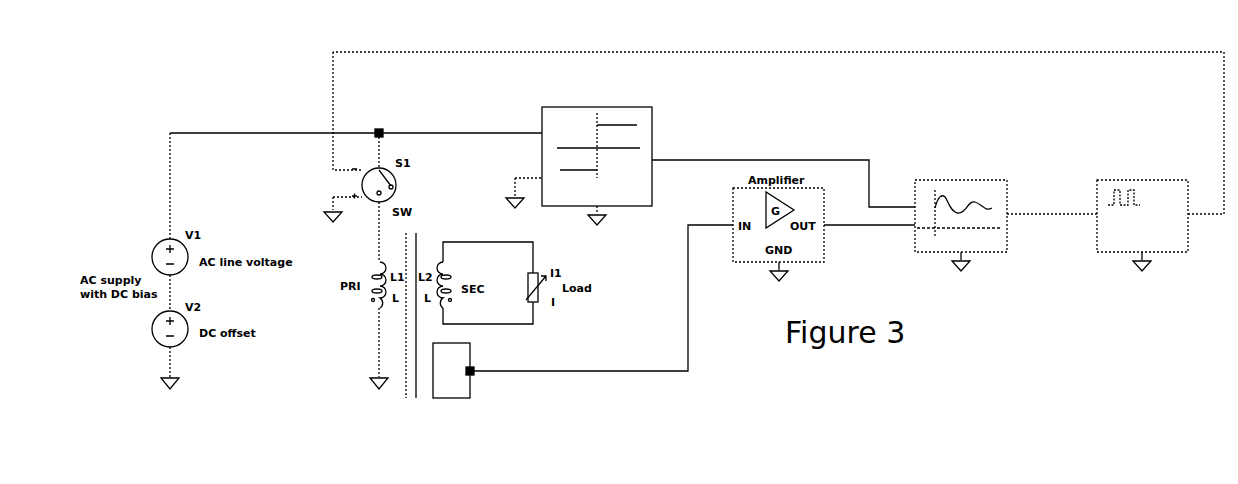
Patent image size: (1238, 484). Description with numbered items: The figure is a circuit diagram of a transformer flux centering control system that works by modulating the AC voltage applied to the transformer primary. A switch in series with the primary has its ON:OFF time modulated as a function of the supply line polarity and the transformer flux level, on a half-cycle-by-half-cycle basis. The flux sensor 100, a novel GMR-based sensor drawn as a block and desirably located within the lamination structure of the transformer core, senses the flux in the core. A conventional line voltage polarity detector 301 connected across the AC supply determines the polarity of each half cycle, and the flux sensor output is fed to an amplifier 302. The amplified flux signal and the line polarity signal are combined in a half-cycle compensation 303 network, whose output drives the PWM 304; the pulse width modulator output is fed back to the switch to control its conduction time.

The flux sensor 100 is at (568, 353).
The line voltage polarity detector 301 is at (665, 92).
The amplifier 302 is at (816, 152).
The half-cycle compensation 303 is at (976, 146).
The PWM 304 is at (1106, 155).